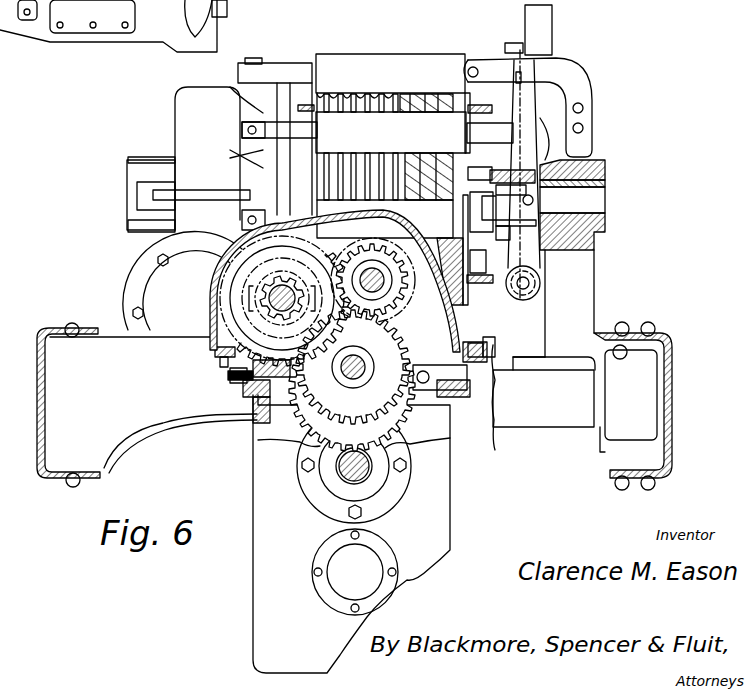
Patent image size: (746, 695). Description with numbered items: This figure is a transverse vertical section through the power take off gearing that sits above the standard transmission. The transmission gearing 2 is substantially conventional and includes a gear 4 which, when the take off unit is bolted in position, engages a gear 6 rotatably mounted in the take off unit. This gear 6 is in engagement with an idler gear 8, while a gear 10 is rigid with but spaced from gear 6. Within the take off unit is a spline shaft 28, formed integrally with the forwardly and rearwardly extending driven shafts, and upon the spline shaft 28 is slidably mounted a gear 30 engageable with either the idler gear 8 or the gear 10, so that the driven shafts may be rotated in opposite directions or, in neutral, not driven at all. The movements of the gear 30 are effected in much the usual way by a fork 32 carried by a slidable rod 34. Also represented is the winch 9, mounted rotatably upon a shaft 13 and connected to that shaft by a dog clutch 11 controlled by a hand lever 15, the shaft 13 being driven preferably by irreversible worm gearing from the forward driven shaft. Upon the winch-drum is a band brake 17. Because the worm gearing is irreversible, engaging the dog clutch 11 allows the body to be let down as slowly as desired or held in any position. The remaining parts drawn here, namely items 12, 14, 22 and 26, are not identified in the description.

The transmission gearing 2 is at (432, 497).
The gear 4 is at (357, 440).
The gear 6 is at (403, 348).
The idler gear 8 is at (372, 253).
The winch 9 is at (460, 97).
The gear 10 is at (373, 387).
The dog clutch 11 is at (587, 161).
The clutch member 12 is at (603, 174).
The shaft 13 is at (560, 197).
The shift lever 14 is at (537, 163).
The hand lever 15 is at (537, 50).
The band brake 17 is at (303, 105).
The spring 22 is at (523, 217).
The pivot pin 26 is at (540, 283).
The spline shaft 28 is at (282, 283).
The gear 30 is at (230, 303).
The fork 32 is at (220, 364).
The slidable rod 34 is at (287, 380).